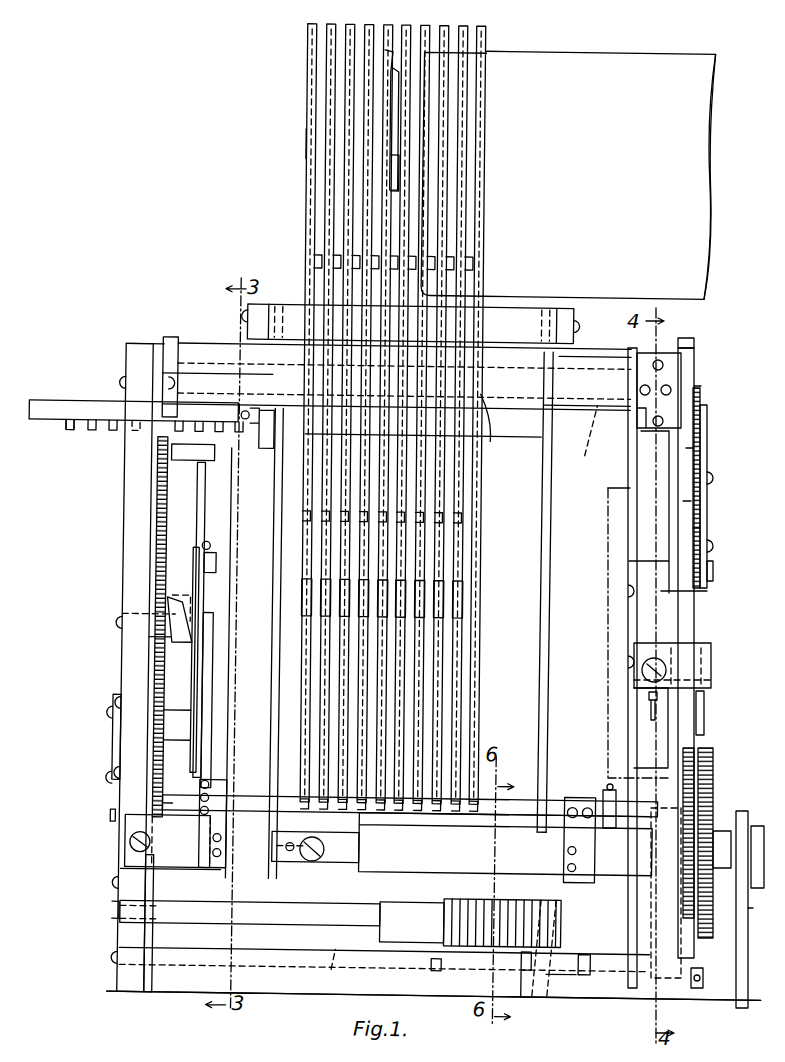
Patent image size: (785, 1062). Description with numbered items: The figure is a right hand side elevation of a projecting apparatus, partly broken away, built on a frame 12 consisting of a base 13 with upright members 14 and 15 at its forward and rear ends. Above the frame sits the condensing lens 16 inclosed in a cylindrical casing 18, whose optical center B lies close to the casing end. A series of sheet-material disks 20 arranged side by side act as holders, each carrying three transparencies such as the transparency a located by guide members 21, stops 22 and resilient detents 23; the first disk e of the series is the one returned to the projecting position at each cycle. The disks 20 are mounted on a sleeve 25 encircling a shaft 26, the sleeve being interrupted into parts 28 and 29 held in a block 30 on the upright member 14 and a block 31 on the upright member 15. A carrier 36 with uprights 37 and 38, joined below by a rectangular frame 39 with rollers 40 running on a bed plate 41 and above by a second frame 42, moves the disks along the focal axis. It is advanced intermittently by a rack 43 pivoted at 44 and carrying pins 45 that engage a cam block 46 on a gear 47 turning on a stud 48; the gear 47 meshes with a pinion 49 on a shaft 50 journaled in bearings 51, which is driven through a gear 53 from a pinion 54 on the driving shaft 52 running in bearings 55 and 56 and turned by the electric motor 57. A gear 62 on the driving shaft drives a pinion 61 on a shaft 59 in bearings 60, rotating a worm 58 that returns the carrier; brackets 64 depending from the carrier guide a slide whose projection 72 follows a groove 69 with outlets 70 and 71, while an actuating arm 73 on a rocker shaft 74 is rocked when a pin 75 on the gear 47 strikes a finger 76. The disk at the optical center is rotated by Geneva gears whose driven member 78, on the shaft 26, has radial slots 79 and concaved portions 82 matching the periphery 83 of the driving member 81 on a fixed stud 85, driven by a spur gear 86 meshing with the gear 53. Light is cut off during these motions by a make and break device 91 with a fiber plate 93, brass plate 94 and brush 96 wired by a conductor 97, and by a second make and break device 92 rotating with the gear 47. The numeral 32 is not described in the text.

The disks 20 is at (311, 20).
The transparency a is at (303, 129).
The optical center B is at (386, 39).
The first disk e is at (479, 26).
The condensing lens 16 is at (589, 41).
The cylindrical casing 18 is at (674, 41).
The second frame 42 is at (294, 293).
The horizontal bar 32 is at (200, 336).
The sleeve part 29 is at (213, 366).
The sleeve part 28 is at (590, 372).
The block 31 is at (171, 333).
The sleeve 25 is at (574, 394).
The shaft 26 is at (581, 439).
The upright member 15 is at (160, 504).
The rack 43 is at (89, 395).
The pins 45 is at (80, 424).
The pivot 44 is at (246, 416).
The make and break device 92 is at (210, 490).
The finger 76 is at (206, 728).
The pin 75 is at (216, 557).
The cam block 46 is at (192, 596).
The stud 48 is at (130, 612).
The gear 47 is at (155, 630).
The upright 38 is at (276, 564).
The stops 22 is at (423, 428).
The guide members 21 is at (476, 587).
The resilient detents 23 is at (478, 700).
The carrier 36 is at (560, 592).
The upright 37 is at (552, 608).
The upright member 14 is at (625, 526).
The block 30 is at (662, 336).
The driven member 78 is at (693, 358).
The radial slots 79 is at (693, 337).
The concaved portions 82 is at (700, 381).
The plate 93 is at (704, 417).
The driving member 81 is at (691, 442).
The brass plate 94 is at (706, 467).
The periphery 83 is at (690, 497).
The spur gear 86 is at (699, 524).
The fixed stud 85 is at (712, 562).
The brush 96 is at (710, 641).
The conductor 97 is at (648, 700).
The make and break device 91 is at (703, 709).
The gear 53 is at (682, 756).
The gear 62 is at (712, 756).
The bearings 51 is at (643, 808).
The bearing 55 is at (740, 803).
The driving shaft 52 is at (756, 818).
The pinion 54 is at (715, 860).
The bearing 56 is at (666, 893).
The electric motor 57 is at (762, 908).
The pinion 61 is at (704, 989).
The rocker shaft 74 is at (247, 788).
The pinion 49 is at (170, 796).
The shaft 50 is at (118, 810).
The bed plate 41 is at (206, 860).
The rollers 40 is at (318, 853).
The rectangular frame 39 is at (356, 852).
The shaft 59 is at (352, 913).
The worm 58 is at (456, 890).
The brackets 64 is at (546, 886).
The groove 69 is at (338, 960).
The outlet 71 is at (440, 958).
The projection 72 is at (531, 958).
The actuating arm 73 is at (593, 962).
The outlet 70 is at (568, 966).
The bearings 60 is at (161, 917).
The frame 12 is at (152, 935).
The base 13 is at (204, 985).